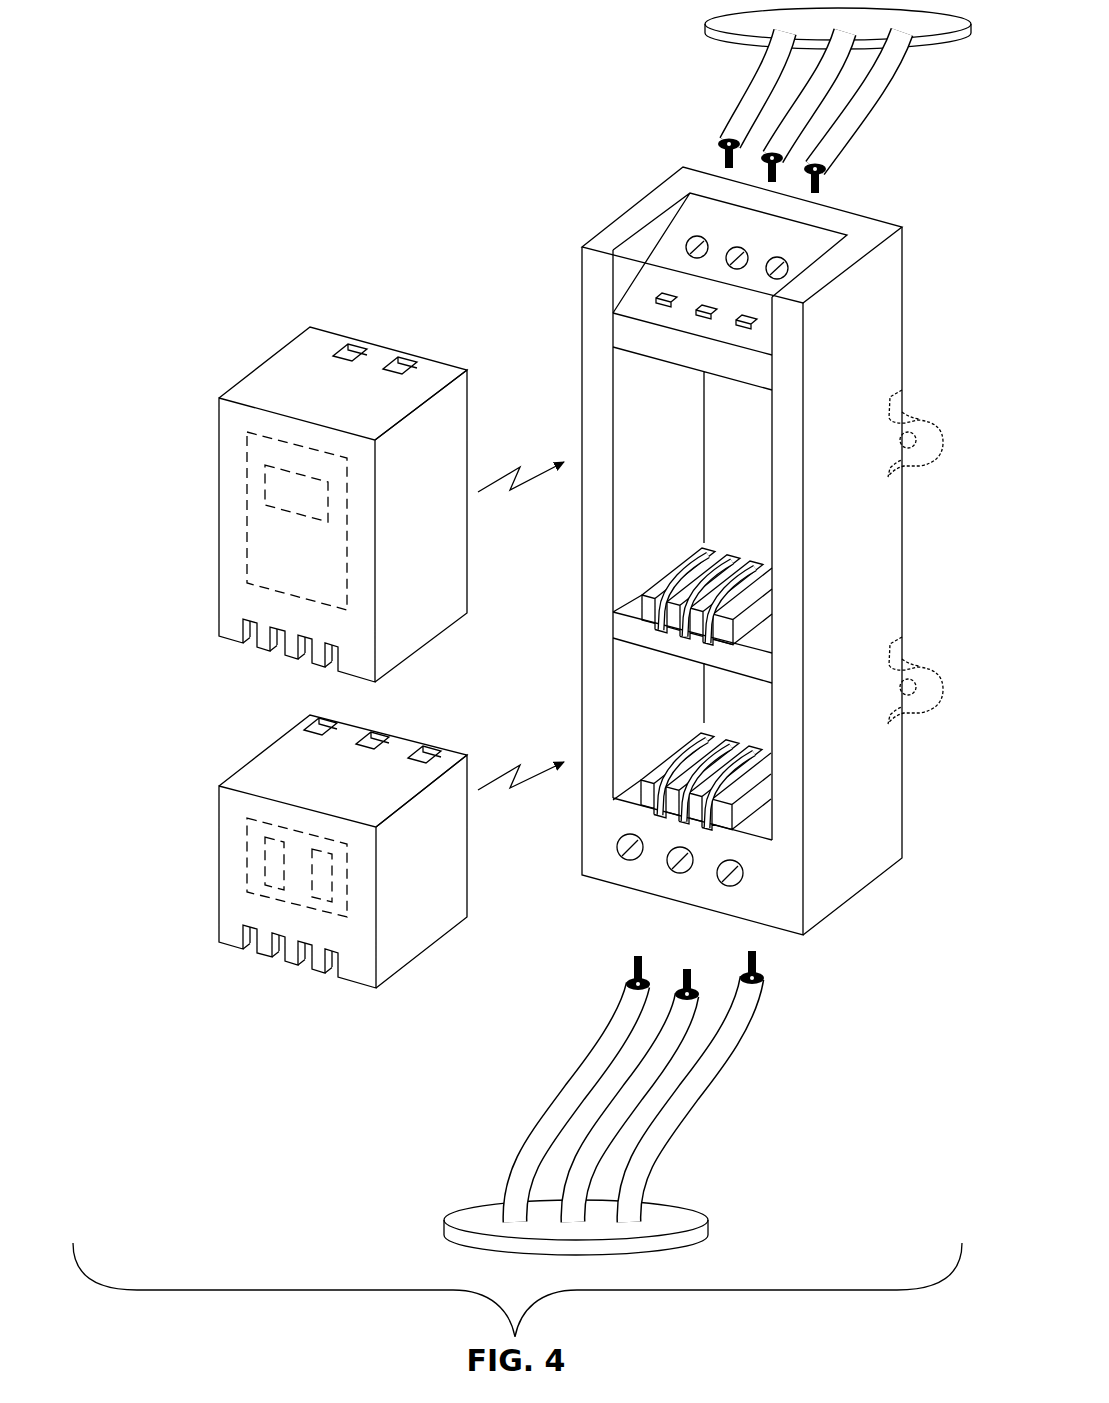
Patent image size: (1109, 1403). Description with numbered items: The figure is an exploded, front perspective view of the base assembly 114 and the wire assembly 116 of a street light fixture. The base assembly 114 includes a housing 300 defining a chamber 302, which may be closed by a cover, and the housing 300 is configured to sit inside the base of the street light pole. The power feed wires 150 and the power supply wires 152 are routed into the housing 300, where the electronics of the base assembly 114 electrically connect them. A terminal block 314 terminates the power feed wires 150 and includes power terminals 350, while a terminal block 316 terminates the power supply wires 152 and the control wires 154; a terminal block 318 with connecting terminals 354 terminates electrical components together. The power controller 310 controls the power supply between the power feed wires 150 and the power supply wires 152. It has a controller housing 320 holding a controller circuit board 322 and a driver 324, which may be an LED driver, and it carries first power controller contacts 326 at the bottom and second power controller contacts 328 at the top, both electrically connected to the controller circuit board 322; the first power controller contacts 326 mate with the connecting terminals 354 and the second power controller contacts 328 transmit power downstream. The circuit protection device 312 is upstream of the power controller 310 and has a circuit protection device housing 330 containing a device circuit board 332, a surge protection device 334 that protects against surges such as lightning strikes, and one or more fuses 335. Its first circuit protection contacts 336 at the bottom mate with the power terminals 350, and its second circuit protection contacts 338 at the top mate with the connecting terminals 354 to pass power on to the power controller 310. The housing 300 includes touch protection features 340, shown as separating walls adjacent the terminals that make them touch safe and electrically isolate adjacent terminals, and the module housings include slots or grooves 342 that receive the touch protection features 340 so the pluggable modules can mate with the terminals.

The base assembly 114 is at (486, 102).
The wire assembly 116 is at (850, 127).
The power feed wires 150 is at (759, 1027).
The power supply wires 152 is at (678, 149).
The control wires 154 is at (836, 166).
The housing 300 is at (882, 350).
The chamber 302 is at (632, 566).
The power controller 310 is at (238, 512).
The circuit protection device 312 is at (236, 845).
The terminal block 314 is at (750, 870).
The terminal block 316 is at (793, 259).
The terminal block 318 is at (753, 605).
The controller housing 320 is at (272, 390).
The controller circuit board 322 is at (254, 548).
The driver 324 is at (268, 472).
The first power controller contacts 326 is at (250, 632).
The second power controller contacts 328 is at (355, 337).
The circuit protection device housing 330 is at (262, 770).
The device circuit board 332 is at (246, 820).
The surge protection device 334 is at (268, 877).
The fuses 335 is at (342, 905).
The first circuit protection contacts 336 is at (247, 941).
The second circuit protection contacts 338 is at (321, 727).
The touch protection features 340 is at (677, 566).
The slots or grooves 342 is at (273, 648).
The power terminals 350 is at (744, 768).
The connecting terminals 354 is at (737, 548).